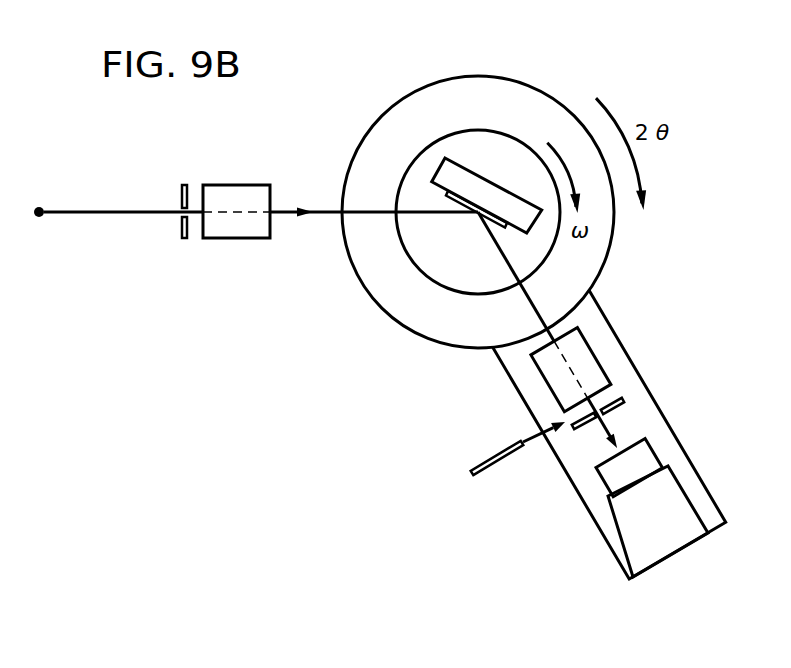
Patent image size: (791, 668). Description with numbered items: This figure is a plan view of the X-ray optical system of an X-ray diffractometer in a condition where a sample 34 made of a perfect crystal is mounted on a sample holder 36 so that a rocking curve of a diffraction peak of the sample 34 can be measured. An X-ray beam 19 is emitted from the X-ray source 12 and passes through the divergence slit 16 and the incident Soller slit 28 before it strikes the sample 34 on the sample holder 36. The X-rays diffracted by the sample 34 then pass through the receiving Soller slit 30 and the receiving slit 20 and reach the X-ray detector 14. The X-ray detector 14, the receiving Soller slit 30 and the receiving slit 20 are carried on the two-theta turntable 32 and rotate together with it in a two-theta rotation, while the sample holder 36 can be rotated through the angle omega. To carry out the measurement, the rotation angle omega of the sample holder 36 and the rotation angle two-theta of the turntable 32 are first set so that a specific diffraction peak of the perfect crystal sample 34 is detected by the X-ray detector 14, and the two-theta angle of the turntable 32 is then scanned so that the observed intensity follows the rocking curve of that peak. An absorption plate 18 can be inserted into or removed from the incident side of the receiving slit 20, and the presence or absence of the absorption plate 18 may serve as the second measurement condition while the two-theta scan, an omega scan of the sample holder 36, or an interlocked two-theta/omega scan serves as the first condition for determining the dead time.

The X-ray source 12 is at (40, 224).
The X-ray detector 14 is at (627, 533).
The divergence slit 16 is at (184, 241).
The absorption plate 18 is at (472, 473).
The X-ray beam 19 is at (105, 210).
The receiving slit 20 is at (572, 430).
The incident Soller slit 28 is at (236, 241).
The receiving Soller slit 30 is at (537, 368).
The 2θ-turntable 32 is at (537, 88).
The sample 34 is at (452, 196).
The sample holder 36 is at (462, 167).